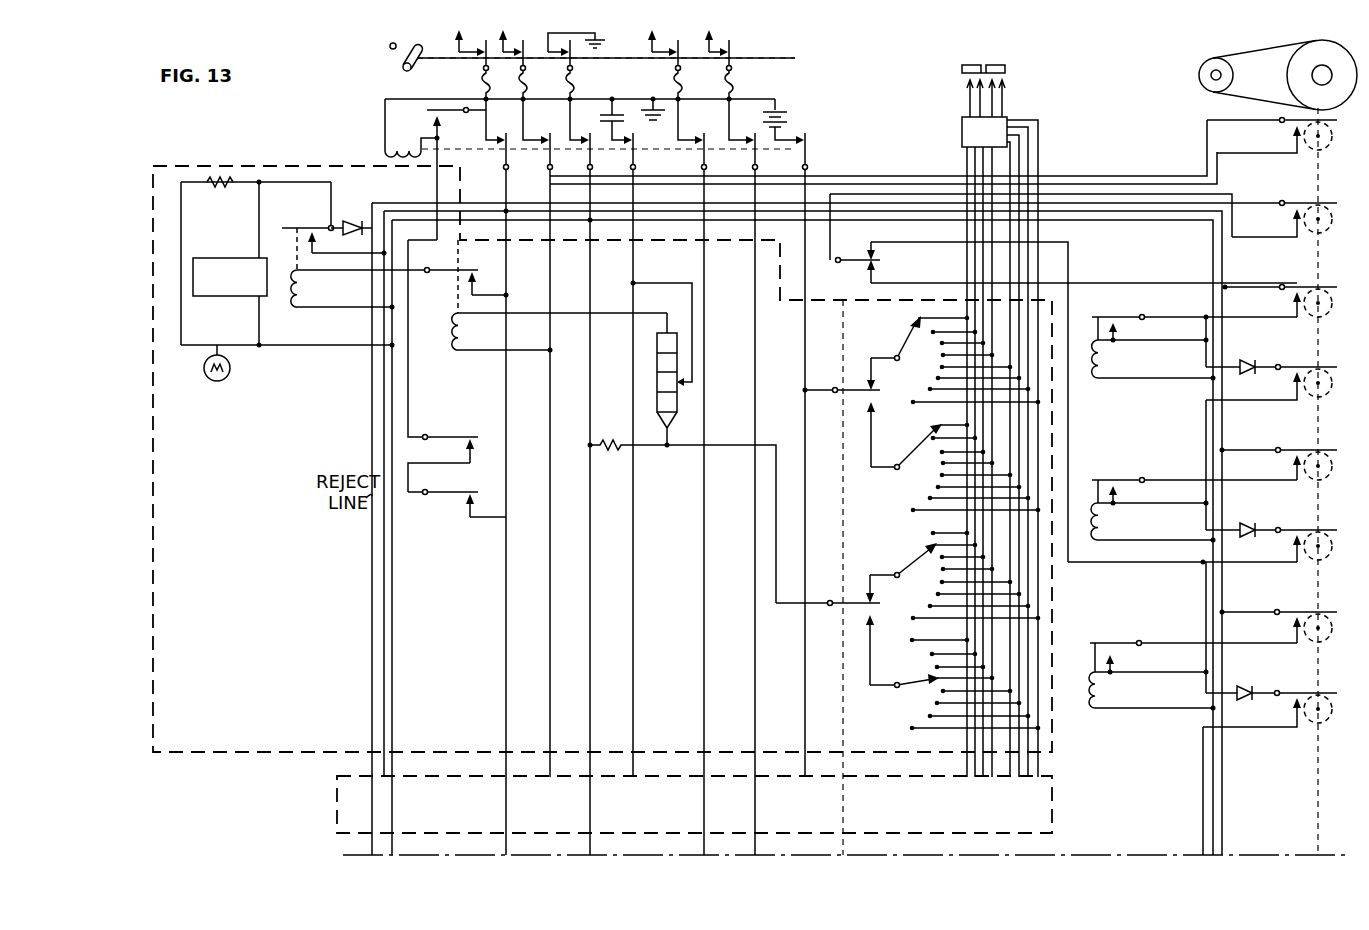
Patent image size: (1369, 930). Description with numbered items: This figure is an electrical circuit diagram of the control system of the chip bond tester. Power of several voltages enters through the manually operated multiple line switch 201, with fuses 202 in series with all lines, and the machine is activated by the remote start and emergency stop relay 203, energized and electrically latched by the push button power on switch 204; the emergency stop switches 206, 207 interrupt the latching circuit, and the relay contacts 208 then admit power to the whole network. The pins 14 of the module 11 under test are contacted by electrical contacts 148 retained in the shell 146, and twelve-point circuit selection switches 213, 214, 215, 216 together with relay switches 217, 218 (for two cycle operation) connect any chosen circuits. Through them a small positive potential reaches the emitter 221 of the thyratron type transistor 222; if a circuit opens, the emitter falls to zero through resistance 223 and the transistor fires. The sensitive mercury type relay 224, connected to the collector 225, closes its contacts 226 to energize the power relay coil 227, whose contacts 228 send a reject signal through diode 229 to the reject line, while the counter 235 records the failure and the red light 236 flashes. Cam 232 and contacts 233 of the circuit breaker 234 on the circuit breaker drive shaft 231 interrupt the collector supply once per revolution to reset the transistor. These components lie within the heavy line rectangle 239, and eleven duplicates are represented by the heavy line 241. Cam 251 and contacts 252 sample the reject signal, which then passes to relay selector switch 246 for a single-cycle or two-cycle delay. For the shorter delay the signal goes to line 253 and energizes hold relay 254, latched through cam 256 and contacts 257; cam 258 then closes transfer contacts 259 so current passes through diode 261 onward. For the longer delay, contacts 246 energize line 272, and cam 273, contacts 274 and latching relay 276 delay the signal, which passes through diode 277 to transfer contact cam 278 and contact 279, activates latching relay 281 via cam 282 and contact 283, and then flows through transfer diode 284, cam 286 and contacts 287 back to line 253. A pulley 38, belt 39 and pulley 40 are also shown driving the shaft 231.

The module 11 is at (1006, 73).
The pins 14 is at (966, 88).
The small pulley 38 is at (1205, 85).
The belt 39 is at (1242, 55).
The large pulley 40 is at (1290, 74).
The shell 146 is at (962, 128).
The electrical contacts 148 is at (1008, 117).
The multiple line switch 201 is at (405, 68).
The fuses 202 is at (486, 88).
The remote start and emergency stop relay 203 is at (403, 150).
The power on switch 204 is at (441, 113).
The emergency stop switch 206 is at (466, 433).
The emergency stop switch 207 is at (453, 500).
The contacts of relay 203 208 is at (622, 137).
The circuit selection switch 213 is at (905, 340).
The circuit selection switch 214 is at (912, 470).
The circuit selection switch 215 is at (910, 558).
The circuit selection switch 216 is at (905, 690).
The relay switch 217 is at (881, 389).
The relay switch 218 is at (881, 609).
The emitter 221 is at (677, 420).
The thyratron type transistor 222 is at (651, 382).
The resistance 223 is at (609, 455).
The sensitive mercury type relay 224 is at (452, 345).
The collector 225 is at (680, 349).
The contacts 226 is at (470, 271).
The coil of power relay 227 is at (304, 293).
The contacts 228 is at (281, 206).
The diode 229 is at (352, 220).
The circuit breaker drive shaft 231 is at (1318, 762).
The cam 232 is at (1331, 154).
The contacts 233 is at (1290, 125).
The circuit breaker 234 is at (1300, 155).
The solenoid actuated counter 235 is at (234, 257).
The flashing red light 236 is at (229, 378).
The heavy line rectangle 239 is at (244, 165).
The heavy line 241 is at (337, 806).
The relay selector switch 246 is at (884, 265).
The timing limit switch cam 251 is at (1331, 235).
The time limiting switch contacts 252 is at (1303, 243).
The line 253 is at (1135, 565).
The electrical hold relay 254 is at (1104, 693).
The cam 256 is at (1331, 642).
The contacts 257 is at (1290, 620).
The cam 258 is at (1331, 725).
The transfer contacts 259 is at (1290, 702).
The diode 261 is at (1246, 686).
The 720° delay line 272 is at (1122, 282).
The cam 273 is at (1331, 319).
The contacts 274 is at (1213, 240).
The electrical latching relay 276 is at (1106, 362).
The diode 277 is at (1242, 360).
The transfer contact cam 278 is at (1281, 449).
The contact 279 is at (1290, 293).
The electrical latching relay 281 is at (1106, 523).
The cam 282 is at (1331, 483).
The contact 283 is at (1290, 457).
The transfer diode 284 is at (1246, 523).
The cam 286 is at (1331, 561).
The contacts 287 is at (1290, 540).